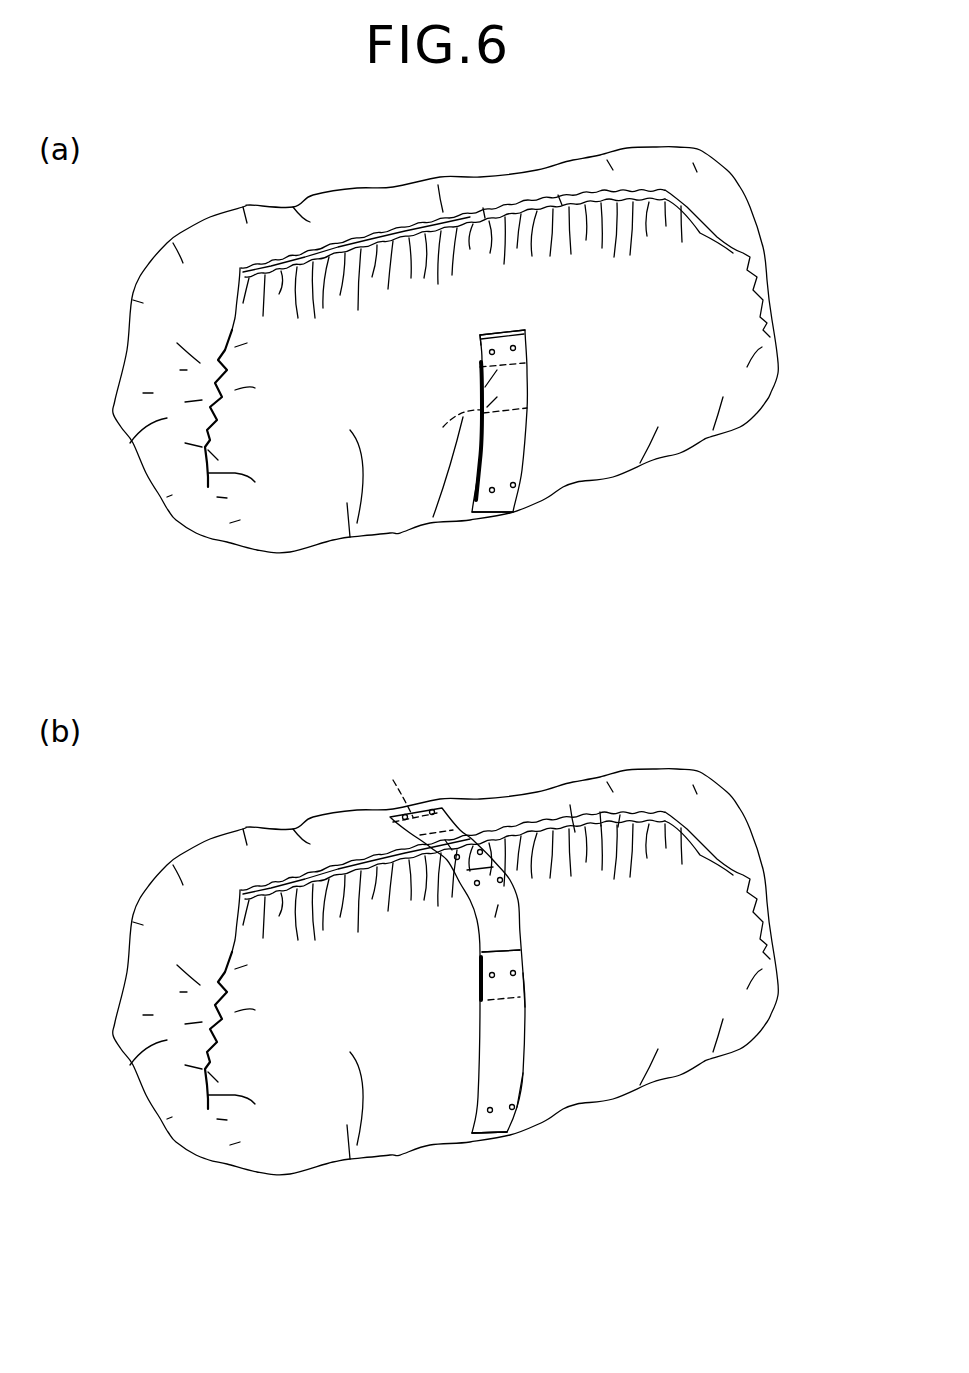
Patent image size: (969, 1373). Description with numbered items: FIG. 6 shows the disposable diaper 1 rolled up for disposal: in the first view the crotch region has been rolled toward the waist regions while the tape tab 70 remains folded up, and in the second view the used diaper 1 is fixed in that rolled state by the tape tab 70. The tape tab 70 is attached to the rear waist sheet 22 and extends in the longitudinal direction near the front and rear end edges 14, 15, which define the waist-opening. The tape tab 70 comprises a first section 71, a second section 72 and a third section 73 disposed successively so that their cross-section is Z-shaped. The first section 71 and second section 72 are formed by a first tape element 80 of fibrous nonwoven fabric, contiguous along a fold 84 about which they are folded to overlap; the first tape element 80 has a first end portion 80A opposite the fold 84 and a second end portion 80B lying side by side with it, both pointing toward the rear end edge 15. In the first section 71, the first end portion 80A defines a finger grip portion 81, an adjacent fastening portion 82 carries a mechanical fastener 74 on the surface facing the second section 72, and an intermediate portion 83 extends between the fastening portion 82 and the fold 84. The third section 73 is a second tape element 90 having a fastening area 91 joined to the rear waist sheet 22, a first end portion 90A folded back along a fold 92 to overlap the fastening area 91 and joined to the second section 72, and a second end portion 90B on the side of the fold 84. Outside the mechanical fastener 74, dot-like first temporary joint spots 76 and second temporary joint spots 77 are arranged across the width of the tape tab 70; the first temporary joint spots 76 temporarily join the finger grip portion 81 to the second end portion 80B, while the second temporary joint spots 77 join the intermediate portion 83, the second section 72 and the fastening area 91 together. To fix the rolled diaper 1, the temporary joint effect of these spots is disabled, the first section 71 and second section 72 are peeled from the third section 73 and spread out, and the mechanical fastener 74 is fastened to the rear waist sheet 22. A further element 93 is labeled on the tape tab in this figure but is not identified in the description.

The disposable diaper 1 is at (165, 222).
The rear waist sheet 22 is at (438, 185).
The front end edge 14 is at (483, 208).
The rear end edge 15 is at (558, 195).
The tape tab 70 is at (600, 346).
The first end portion 80A is at (512, 332).
The second end portion 80B is at (483, 335).
The first temporary joint spots 76 is at (505, 333).
The first section 71 is at (497, 370).
The finger grip portion 81 is at (541, 335).
The fastening portion 82 is at (541, 365).
The intermediate portion 83 is at (541, 413).
The mechanical fastener 74 is at (413, 407).
The second temporary joint spots 77 is at (492, 492).
The fold 84 is at (513, 487).
The first tape element 80 is at (523, 915).
The second section 72 is at (495, 917).
The second tape element 90 is at (480, 1012).
The first end portion 90A is at (503, 950).
The fixing piece fold line 93 is at (497, 1000).
The fastening area 91 is at (541, 955).
The fold 92 is at (541, 1000).
The third section 73 is at (497, 1090).
The second end portion 90B is at (503, 1137).